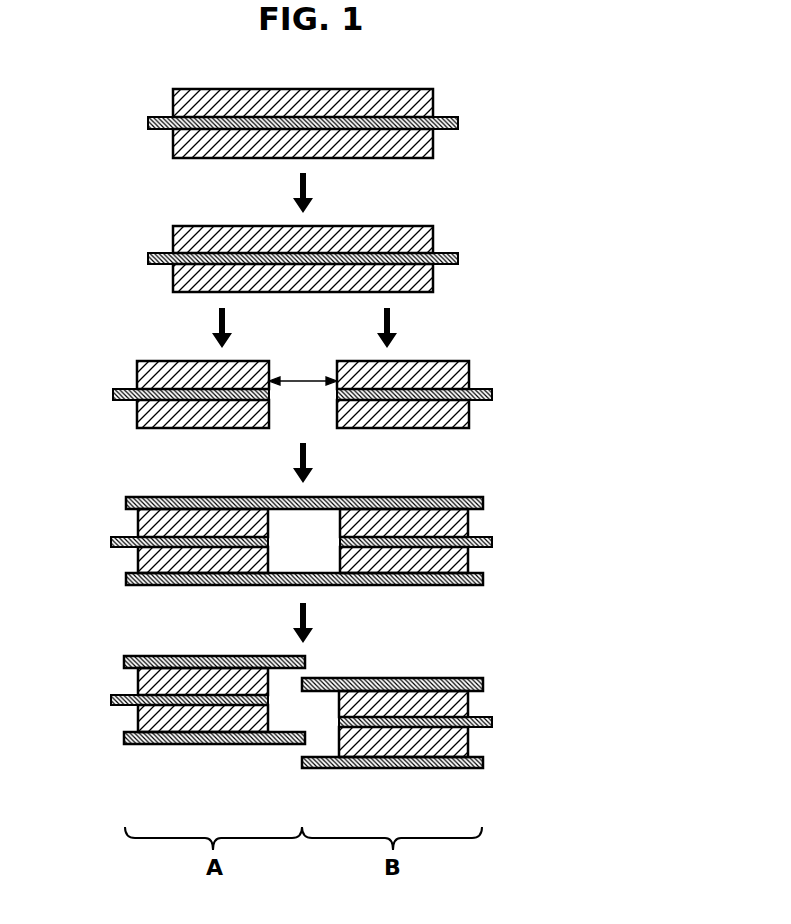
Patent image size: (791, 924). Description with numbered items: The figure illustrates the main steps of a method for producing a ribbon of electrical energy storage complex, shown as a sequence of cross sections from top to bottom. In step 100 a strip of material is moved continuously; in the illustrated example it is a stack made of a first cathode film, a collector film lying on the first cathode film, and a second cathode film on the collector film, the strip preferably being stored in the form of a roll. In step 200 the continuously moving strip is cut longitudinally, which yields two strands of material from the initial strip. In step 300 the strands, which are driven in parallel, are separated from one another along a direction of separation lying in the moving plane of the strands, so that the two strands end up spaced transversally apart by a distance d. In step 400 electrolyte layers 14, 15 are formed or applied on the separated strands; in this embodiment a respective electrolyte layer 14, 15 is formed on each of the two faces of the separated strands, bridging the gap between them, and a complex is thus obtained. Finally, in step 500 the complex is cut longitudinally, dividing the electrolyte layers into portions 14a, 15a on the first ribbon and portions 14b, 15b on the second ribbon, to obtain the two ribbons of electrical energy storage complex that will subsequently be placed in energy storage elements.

The electrolyte layer 14 is at (148, 497).
The electrolyte layer 15 is at (148, 585).
The electrolyte layer portion 14a is at (212, 660).
The electrolyte layer portion 14b is at (410, 678).
The electrolyte layer portion 15a is at (215, 744).
The electrolyte layer portion 15b is at (410, 768).
The distance d is at (303, 369).
The step 100 is at (414, 124).
The step 200 is at (414, 258).
The step 300 is at (359, 395).
The step 400 is at (359, 543).
The step 500 is at (359, 716).